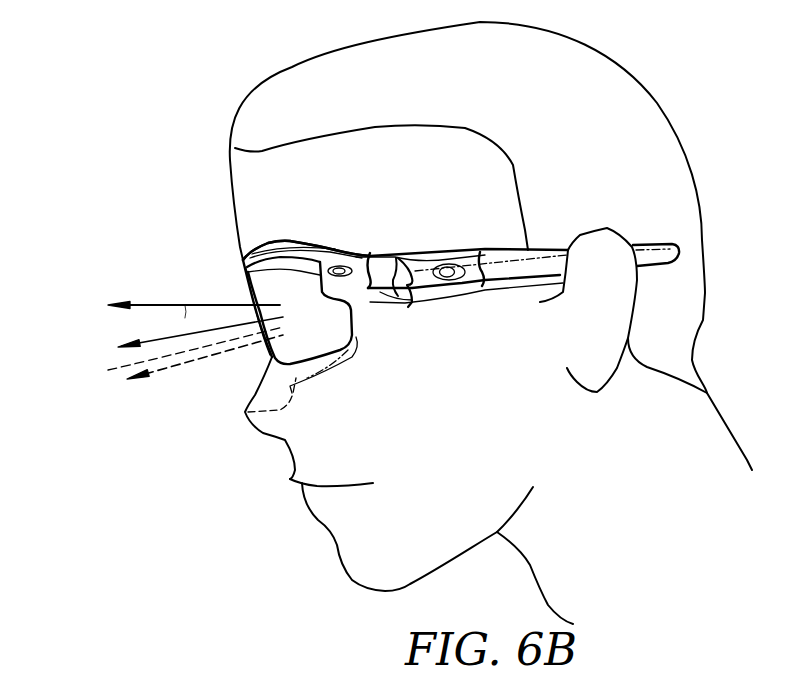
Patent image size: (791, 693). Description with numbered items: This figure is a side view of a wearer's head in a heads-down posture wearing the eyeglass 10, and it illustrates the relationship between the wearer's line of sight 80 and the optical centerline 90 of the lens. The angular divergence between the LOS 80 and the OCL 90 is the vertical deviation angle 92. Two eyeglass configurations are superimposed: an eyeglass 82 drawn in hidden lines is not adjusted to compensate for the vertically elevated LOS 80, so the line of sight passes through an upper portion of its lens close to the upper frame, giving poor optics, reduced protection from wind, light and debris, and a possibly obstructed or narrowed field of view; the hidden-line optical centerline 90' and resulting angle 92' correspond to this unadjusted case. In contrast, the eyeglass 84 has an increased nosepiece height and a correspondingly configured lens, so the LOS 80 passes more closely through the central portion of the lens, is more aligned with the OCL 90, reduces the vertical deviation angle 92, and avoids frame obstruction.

The eyeglass 10 is at (213, 235).
The line of sight (LOS) 80 is at (150, 303).
The eyeglass 82 is at (245, 412).
The eyeglass 84 is at (268, 240).
The optical centerline (OCL) 90 is at (160, 332).
The alternate line of sight 90' is at (205, 393).
The vertical deviation angle 92 is at (187, 280).
The alternate angle of sight 92' is at (176, 353).